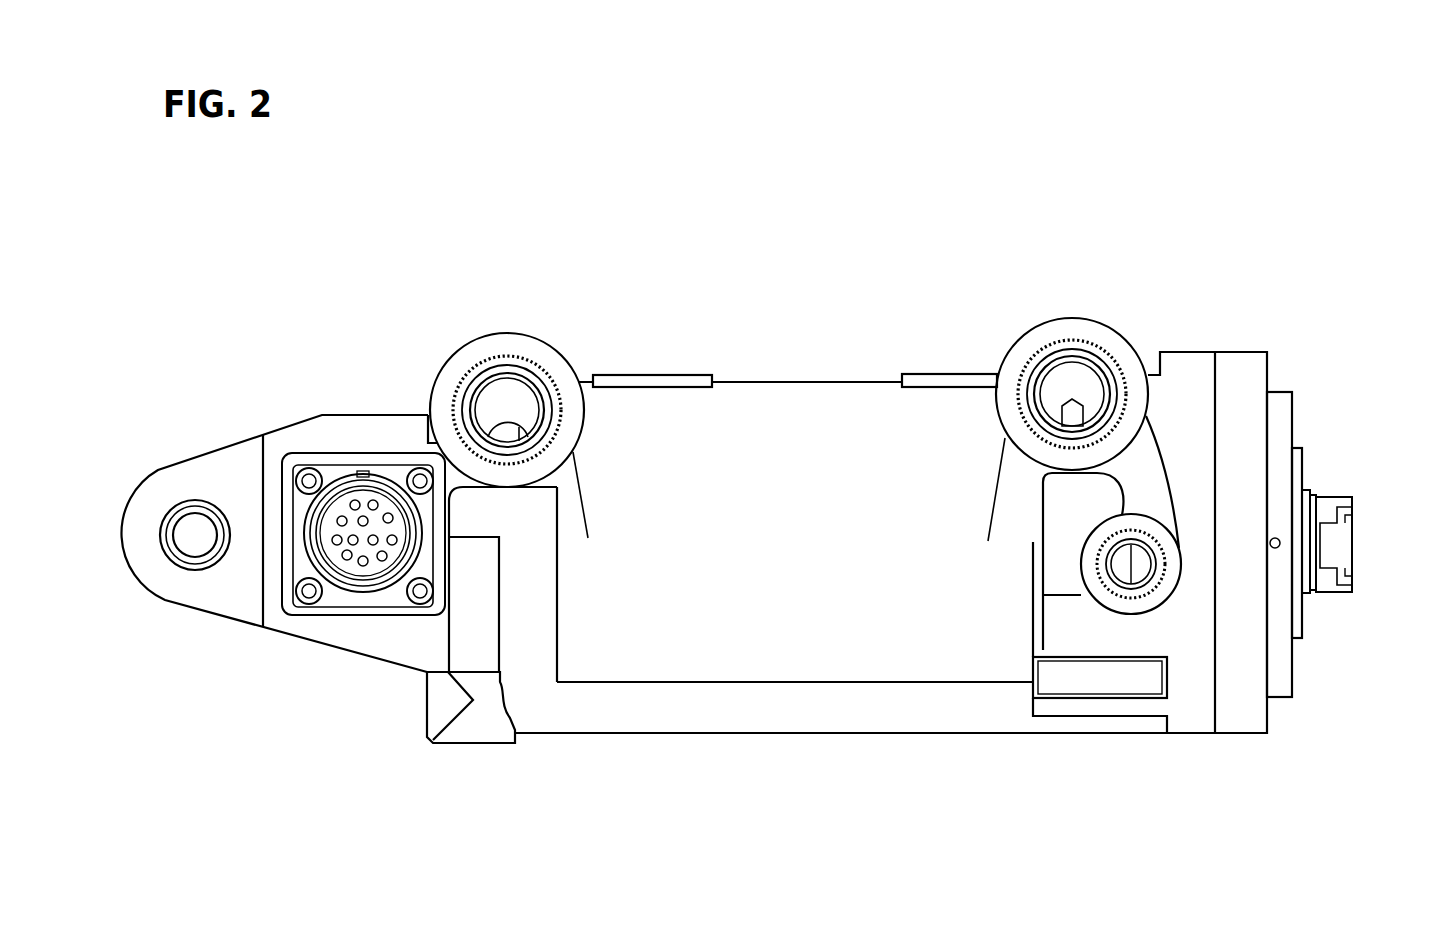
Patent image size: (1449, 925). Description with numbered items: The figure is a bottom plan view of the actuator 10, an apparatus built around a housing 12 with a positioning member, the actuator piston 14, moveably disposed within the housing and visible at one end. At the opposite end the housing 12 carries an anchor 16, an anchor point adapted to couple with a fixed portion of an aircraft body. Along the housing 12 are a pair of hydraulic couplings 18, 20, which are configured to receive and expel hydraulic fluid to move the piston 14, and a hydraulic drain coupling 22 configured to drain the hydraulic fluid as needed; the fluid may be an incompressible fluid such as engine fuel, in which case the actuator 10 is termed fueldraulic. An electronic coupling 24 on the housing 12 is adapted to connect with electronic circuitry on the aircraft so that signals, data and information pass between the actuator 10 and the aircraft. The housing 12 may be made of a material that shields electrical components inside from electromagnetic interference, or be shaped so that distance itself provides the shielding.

The actuator 10 is at (768, 128).
The housing 12 is at (802, 368).
The actuator piston 14 is at (1339, 478).
The anchor 16 is at (150, 490).
The hydraulic coupling 18 is at (515, 345).
The hydraulic coupling 20 is at (1080, 332).
The hydraulic drain coupling 22 is at (1167, 585).
The electronic coupling 24 is at (338, 593).